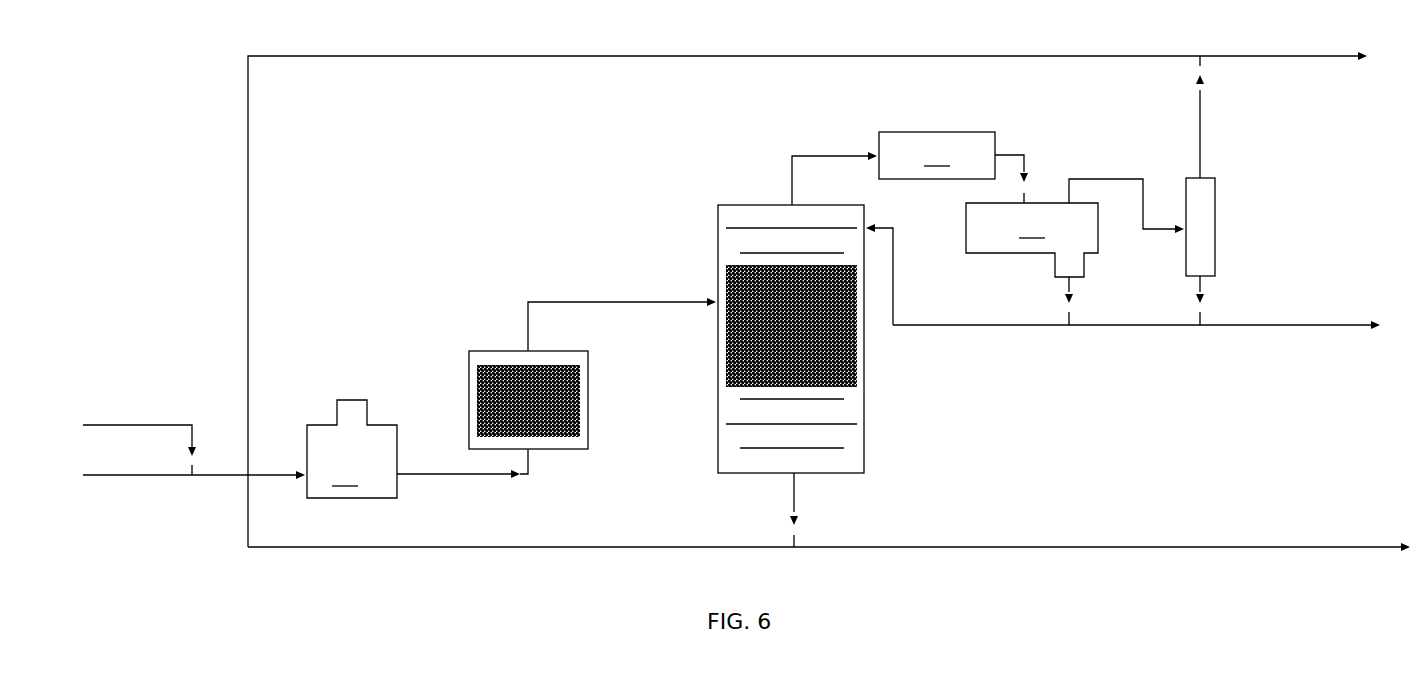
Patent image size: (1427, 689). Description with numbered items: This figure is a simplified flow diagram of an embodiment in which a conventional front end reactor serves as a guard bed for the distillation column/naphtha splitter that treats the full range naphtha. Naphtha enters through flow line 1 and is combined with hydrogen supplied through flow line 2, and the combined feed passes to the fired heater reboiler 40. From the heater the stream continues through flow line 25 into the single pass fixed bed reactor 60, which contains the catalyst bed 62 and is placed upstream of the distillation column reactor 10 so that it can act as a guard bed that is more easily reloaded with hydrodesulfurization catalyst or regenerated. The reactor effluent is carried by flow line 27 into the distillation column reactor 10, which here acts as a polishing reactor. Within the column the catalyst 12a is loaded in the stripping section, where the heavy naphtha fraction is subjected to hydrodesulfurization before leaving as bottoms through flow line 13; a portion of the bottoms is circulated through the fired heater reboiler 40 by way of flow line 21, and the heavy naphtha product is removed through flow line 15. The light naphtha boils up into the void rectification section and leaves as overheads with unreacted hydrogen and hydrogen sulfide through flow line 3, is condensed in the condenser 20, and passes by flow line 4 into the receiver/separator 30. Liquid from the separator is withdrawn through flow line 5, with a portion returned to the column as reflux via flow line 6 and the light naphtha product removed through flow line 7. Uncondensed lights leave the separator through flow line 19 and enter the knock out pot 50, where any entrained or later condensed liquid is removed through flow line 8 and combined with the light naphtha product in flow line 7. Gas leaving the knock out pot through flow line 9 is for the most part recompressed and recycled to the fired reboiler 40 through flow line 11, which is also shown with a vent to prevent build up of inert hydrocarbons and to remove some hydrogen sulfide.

The flow line 1 is at (124, 475).
The flow line 2 is at (170, 426).
The flow line 3 is at (806, 156).
The condensed overhead line 4 is at (1020, 146).
The flow line 5 is at (1060, 298).
The flow line 6 is at (973, 326).
The flow line 7 is at (1230, 326).
The flow line 8 is at (1195, 300).
The stripper vent line 9 is at (1198, 110).
The distillation column reactor 10 is at (730, 207).
The flow line 11 is at (896, 67).
The catalyst 12a is at (855, 337).
The flow line 13 is at (794, 500).
The flow line 15 is at (1088, 544).
The flow line 19 is at (1124, 185).
The condenser 20 is at (937, 155).
The flow line 21 is at (508, 542).
The heated feed line 25 is at (477, 474).
The reactor effluent line 27 is at (551, 302).
The receiver/separator 30 is at (1032, 240).
The fired heater reboiler 40 is at (352, 449).
The knock out pot 50 is at (1208, 231).
The single pass fixed bed reactor 60 is at (469, 353).
The catalyst bed 62 is at (562, 403).